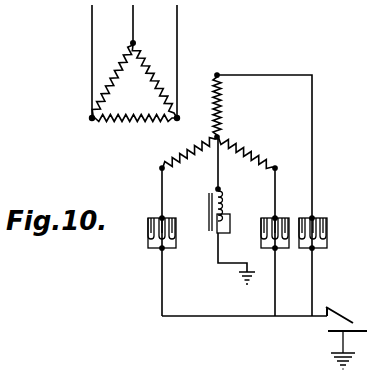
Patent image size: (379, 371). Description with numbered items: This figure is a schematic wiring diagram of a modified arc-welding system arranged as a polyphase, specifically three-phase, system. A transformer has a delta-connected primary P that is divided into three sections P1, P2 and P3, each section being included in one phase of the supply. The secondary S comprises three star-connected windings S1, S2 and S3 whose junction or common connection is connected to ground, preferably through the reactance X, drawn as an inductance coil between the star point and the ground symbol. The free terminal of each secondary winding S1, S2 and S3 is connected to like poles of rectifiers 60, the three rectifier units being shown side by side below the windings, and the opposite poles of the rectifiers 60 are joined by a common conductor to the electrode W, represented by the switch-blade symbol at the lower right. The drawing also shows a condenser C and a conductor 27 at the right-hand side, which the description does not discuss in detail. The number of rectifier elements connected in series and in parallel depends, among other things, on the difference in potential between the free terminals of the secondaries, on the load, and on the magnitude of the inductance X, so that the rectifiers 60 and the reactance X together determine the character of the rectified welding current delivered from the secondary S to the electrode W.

The delta-connected primary P is at (114, 63).
The primary section P1 is at (112, 77).
The primary section P2 is at (177, 56).
The primary section P3 is at (134, 108).
The secondary S is at (225, 129).
The star-connected secondary winding S1 is at (223, 106).
The star-connected secondary winding S2 is at (272, 111).
The star-connected secondary winding S3 is at (189, 160).
The reactance X is at (210, 211).
The rectifiers 60 is at (129, 240).
The electrode W is at (333, 282).
The condenser C is at (353, 349).
The conductor 27 is at (370, 175).